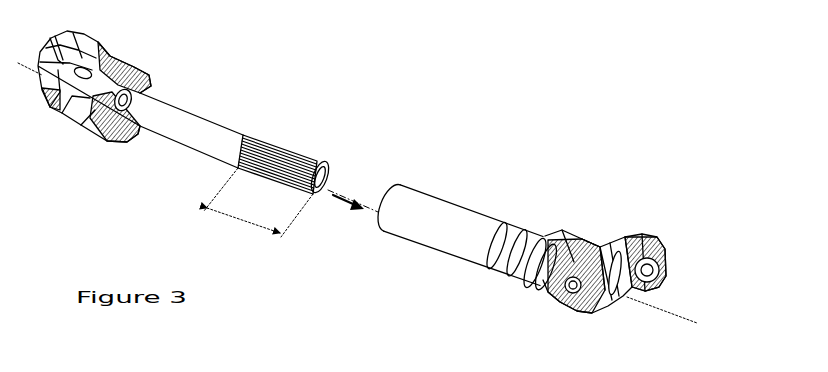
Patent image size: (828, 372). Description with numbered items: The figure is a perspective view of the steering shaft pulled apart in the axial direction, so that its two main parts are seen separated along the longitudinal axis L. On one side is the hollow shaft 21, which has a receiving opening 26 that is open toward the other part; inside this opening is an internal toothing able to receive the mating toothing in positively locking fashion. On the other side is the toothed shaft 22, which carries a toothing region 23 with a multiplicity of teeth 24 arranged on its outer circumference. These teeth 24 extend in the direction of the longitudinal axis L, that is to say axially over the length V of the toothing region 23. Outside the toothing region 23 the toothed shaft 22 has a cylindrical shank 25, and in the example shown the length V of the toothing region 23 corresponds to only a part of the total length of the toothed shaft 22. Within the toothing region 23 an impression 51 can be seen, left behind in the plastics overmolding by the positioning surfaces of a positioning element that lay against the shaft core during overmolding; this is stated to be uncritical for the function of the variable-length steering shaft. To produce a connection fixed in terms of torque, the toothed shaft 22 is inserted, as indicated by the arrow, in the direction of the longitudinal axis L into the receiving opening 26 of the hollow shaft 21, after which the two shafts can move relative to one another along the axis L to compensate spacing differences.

The hollow shaft 21 is at (459, 188).
The toothed shaft 22 is at (191, 105).
The toothing region 23 is at (271, 124).
The teeth 24 is at (317, 166).
The cylindrical shank 25 is at (163, 118).
The receiving opening 26 is at (389, 183).
The impression 51 is at (240, 151).
The length of the toothing region V is at (258, 202).
The longitudinal axis L is at (697, 323).